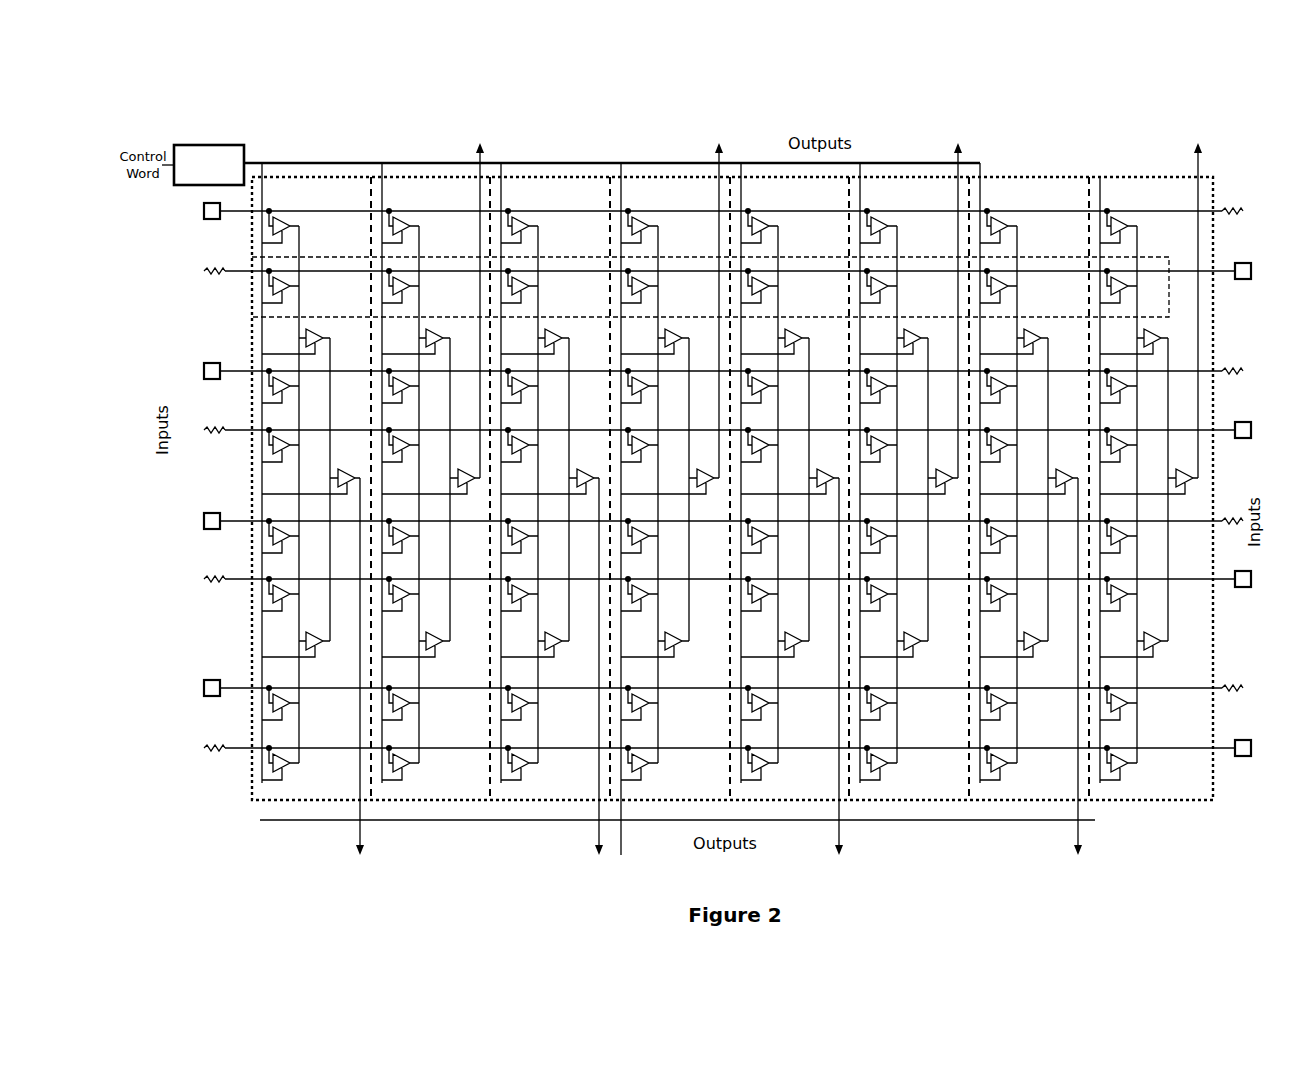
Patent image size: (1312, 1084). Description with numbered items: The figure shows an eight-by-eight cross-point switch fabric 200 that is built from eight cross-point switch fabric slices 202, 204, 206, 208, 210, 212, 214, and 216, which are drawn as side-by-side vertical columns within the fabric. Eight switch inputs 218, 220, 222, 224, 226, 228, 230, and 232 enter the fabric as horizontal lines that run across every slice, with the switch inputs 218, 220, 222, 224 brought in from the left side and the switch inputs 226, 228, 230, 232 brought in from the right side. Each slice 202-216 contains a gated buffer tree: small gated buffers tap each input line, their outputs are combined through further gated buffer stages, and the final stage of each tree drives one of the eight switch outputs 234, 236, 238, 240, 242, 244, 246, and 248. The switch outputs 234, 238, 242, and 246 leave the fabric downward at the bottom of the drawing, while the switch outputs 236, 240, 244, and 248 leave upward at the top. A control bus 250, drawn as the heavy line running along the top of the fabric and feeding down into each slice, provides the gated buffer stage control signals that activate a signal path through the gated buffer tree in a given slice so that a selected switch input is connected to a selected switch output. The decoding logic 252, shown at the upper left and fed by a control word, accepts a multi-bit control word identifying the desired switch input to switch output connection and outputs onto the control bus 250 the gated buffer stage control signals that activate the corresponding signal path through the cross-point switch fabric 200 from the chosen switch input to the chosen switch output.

The cross-point switch fabric 200 is at (1157, 113).
The cross-point switch fabric slice 202 is at (290, 160).
The cross-point switch fabric slice 204 is at (400, 160).
The cross-point switch fabric slice 206 is at (527, 160).
The cross-point switch fabric slice 208 is at (640, 160).
The cross-point switch fabric slice 210 is at (768, 160).
The cross-point switch fabric slice 212 is at (877, 160).
The cross-point switch fabric slice 214 is at (1003, 172).
The cross-point switch fabric slice 216 is at (1118, 172).
The switch input 218 is at (204, 213).
The switch input 220 is at (204, 372).
The switch input 222 is at (204, 522).
The switch input 224 is at (204, 690).
The switch input 226 is at (1251, 263).
The switch input 228 is at (1251, 422).
The switch input 230 is at (1251, 586).
The switch input 232 is at (1251, 740).
The switch output 234 is at (367, 847).
The switch output 236 is at (479, 143).
The switch output 238 is at (605, 845).
The switch output 240 is at (718, 143).
The switch output 242 is at (846, 847).
The switch output 244 is at (957, 143).
The switch output 246 is at (1085, 847).
The switch output 248 is at (1204, 151).
The control bus 250 is at (256, 175).
The decoding logic 252 is at (203, 145).